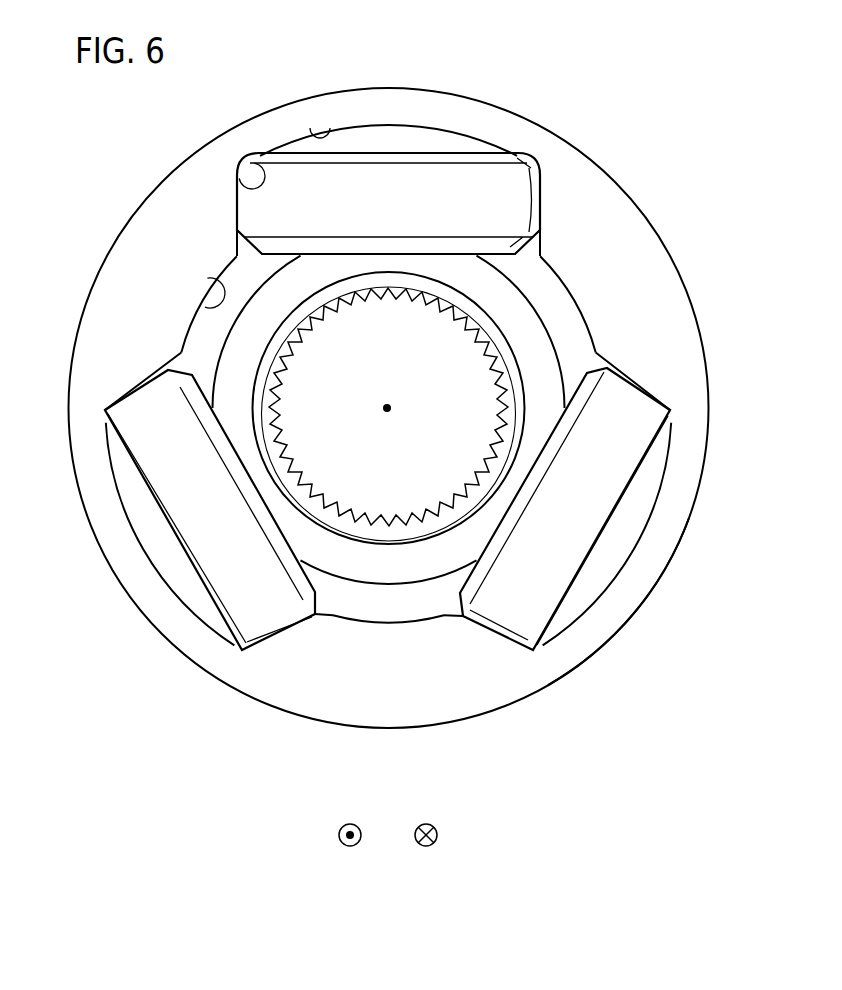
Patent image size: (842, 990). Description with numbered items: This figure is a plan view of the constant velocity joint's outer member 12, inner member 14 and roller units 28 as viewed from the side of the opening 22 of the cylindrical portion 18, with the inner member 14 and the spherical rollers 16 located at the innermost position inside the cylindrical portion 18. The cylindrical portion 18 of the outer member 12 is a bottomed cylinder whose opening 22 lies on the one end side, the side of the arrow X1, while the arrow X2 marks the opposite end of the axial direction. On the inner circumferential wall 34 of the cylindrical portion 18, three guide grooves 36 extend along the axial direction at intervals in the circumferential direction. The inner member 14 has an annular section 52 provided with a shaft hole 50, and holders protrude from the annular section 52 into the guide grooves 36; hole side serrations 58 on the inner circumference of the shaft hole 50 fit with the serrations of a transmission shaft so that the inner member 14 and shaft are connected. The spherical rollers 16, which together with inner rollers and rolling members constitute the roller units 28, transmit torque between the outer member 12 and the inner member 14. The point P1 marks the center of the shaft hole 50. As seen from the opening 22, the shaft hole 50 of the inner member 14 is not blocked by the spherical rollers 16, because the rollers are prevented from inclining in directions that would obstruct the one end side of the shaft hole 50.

The outer member 12 is at (170, 674).
The inner member 14 is at (562, 318).
The spherical roller 16 is at (532, 178).
The cylindrical portion 18 is at (642, 604).
The opening 22 is at (309, 130).
The roller unit 28 is at (403, 146).
The inner circumferential wall 34 is at (211, 299).
The guide groove 36 is at (266, 163).
The shaft hole 50 is at (388, 407).
The annular section 52 is at (507, 298).
The hole side serration 58 is at (331, 312).
The center point P1 is at (401, 408).
The arrow X1 is at (351, 851).
The arrow X2 is at (427, 851).